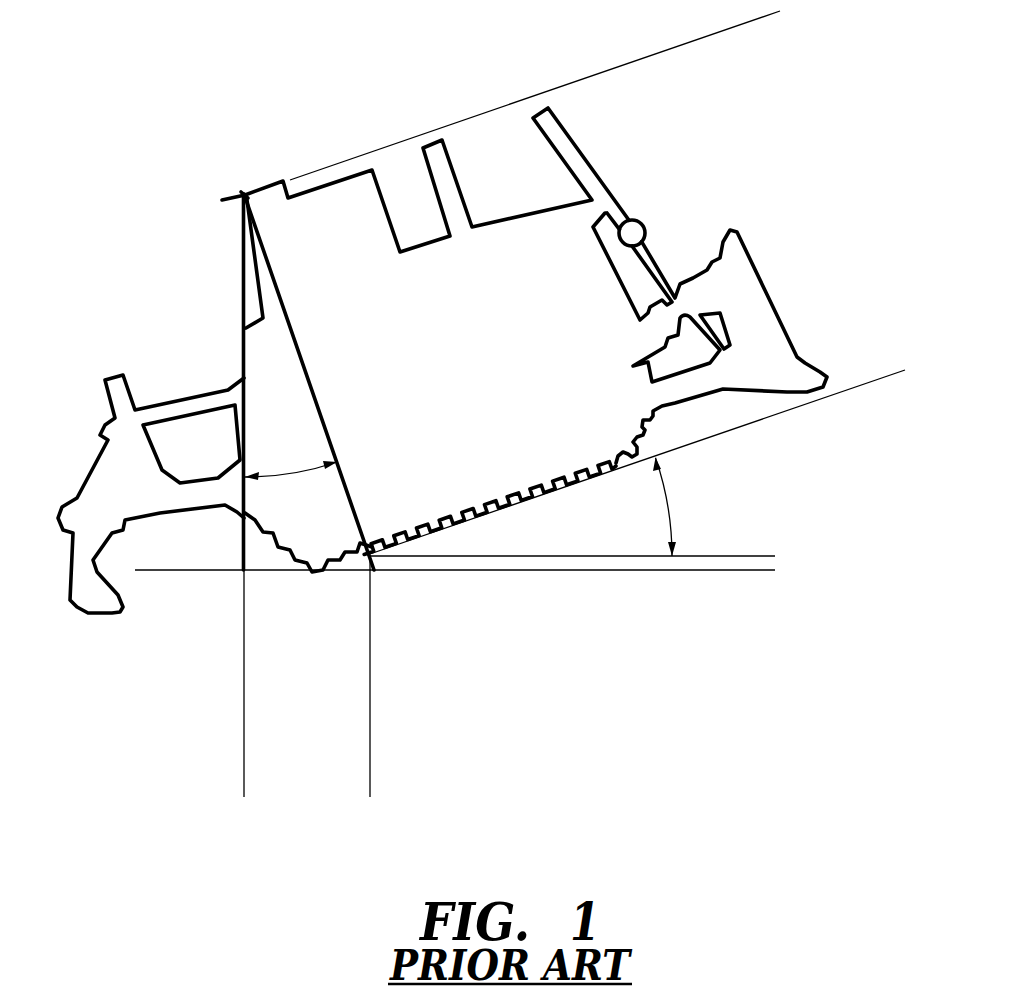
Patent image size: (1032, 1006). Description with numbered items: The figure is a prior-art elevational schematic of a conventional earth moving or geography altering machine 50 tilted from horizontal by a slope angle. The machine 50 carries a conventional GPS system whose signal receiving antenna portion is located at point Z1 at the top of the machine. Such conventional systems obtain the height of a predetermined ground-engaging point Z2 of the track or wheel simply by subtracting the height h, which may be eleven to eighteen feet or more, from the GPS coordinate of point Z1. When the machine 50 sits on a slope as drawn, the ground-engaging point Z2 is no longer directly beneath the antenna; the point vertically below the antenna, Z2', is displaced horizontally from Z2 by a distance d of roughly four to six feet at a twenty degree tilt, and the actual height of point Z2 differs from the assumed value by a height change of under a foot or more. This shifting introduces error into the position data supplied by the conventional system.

The earth moving machine 50 is at (493, 360).
The signal receiving antenna portion Z1 is at (246, 190).
The predetermined ground-engaging point Z2 is at (334, 471).
The point vertically below the antenna Z2' is at (275, 474).
The height h is at (897, 372).
The distance d is at (370, 793).